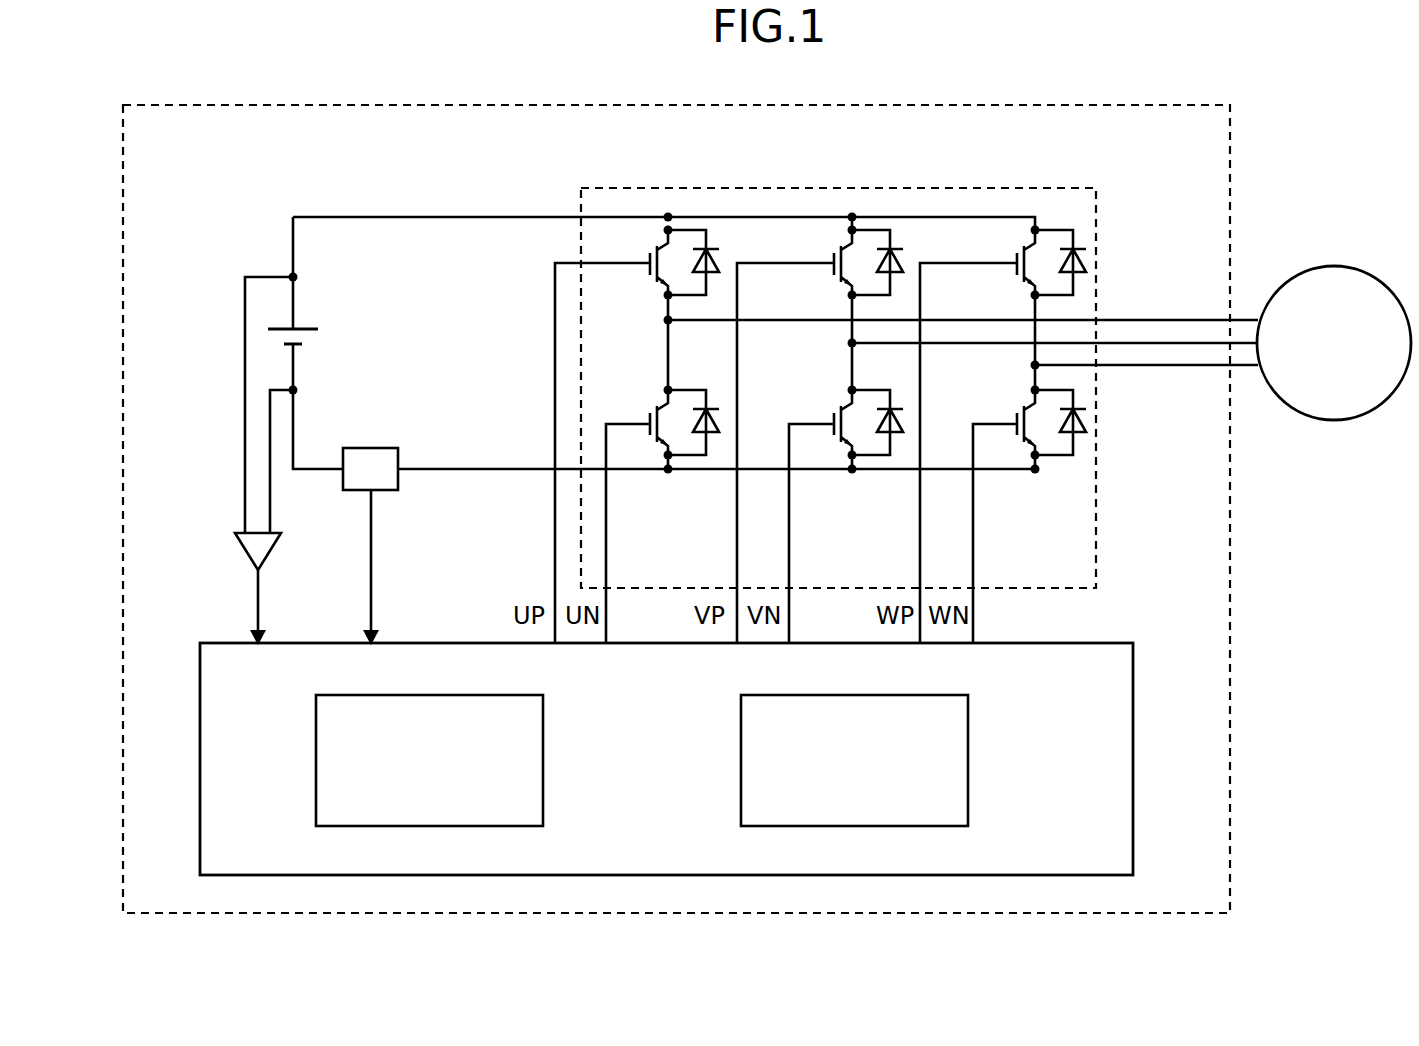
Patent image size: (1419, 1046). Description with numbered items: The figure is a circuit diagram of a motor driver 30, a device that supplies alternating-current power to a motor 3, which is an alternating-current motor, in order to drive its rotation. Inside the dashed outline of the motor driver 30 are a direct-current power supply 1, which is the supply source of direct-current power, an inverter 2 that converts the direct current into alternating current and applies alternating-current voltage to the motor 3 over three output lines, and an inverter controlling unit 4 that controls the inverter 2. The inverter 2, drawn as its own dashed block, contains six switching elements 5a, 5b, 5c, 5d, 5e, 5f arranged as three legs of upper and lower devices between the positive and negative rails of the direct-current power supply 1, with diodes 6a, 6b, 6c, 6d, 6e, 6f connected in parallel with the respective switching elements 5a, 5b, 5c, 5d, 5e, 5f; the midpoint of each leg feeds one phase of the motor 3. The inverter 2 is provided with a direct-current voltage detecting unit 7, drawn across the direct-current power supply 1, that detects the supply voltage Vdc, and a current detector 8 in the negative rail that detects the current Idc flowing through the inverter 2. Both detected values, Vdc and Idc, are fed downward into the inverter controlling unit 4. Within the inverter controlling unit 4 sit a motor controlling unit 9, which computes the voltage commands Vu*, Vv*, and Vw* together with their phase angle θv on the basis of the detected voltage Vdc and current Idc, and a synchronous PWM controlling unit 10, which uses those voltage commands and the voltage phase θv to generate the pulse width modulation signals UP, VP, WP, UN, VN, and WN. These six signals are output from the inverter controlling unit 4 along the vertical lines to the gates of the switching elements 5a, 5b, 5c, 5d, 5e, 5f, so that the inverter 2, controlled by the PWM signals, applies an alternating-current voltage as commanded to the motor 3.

The motor driver 30 is at (1174, 105).
The direct-current power supply 1 is at (305, 329).
The inverter 2 is at (1096, 205).
The motor 3 is at (1334, 266).
The inverter controlling unit 4 is at (1096, 643).
The switching element 5a is at (650, 250).
The switching element 5b is at (834, 250).
The switching element 5c is at (1017, 250).
The switching element 5d is at (652, 442).
The switching element 5e is at (836, 442).
The switching element 5f is at (1019, 442).
The diode 6a is at (706, 232).
The diode 6b is at (890, 232).
The diode 6c is at (1073, 232).
The diode 6d is at (706, 470).
The diode 6e is at (890, 470).
The diode 6f is at (1073, 470).
The direct-current voltage detecting unit 7 is at (236, 552).
The current detector 8 is at (371, 448).
The motor controlling unit 9 is at (500, 695).
The synchronous PWM controlling unit 10 is at (922, 695).